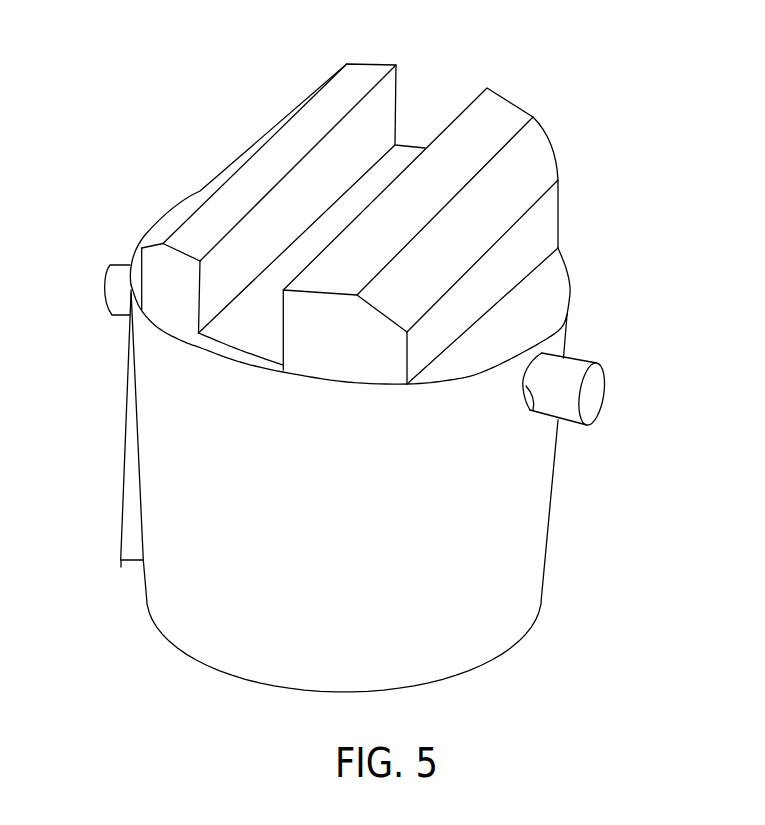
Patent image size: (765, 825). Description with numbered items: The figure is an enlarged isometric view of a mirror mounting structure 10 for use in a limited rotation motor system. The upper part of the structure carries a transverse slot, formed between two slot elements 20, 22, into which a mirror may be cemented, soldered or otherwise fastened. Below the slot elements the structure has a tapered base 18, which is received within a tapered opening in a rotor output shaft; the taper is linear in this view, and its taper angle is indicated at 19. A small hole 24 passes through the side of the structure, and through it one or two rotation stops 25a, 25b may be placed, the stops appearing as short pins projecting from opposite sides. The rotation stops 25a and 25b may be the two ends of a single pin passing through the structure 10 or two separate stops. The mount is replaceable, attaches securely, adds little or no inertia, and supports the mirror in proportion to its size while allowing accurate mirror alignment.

The mirror mounting structure 10 is at (361, 356).
The tapered base 18 is at (535, 533).
The taper angle 19 is at (132, 562).
The slot element 20 is at (505, 101).
The slot element 22 is at (365, 68).
The small hole 24 is at (533, 413).
The rotation stop 25a is at (578, 368).
The rotation stop 25b is at (115, 262).